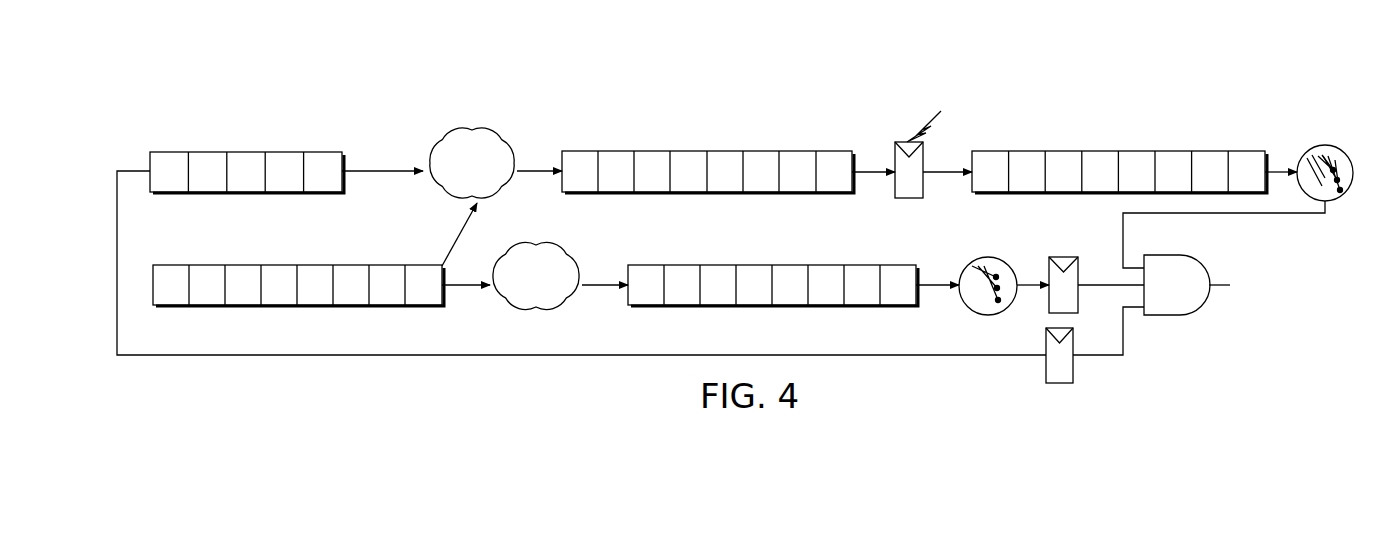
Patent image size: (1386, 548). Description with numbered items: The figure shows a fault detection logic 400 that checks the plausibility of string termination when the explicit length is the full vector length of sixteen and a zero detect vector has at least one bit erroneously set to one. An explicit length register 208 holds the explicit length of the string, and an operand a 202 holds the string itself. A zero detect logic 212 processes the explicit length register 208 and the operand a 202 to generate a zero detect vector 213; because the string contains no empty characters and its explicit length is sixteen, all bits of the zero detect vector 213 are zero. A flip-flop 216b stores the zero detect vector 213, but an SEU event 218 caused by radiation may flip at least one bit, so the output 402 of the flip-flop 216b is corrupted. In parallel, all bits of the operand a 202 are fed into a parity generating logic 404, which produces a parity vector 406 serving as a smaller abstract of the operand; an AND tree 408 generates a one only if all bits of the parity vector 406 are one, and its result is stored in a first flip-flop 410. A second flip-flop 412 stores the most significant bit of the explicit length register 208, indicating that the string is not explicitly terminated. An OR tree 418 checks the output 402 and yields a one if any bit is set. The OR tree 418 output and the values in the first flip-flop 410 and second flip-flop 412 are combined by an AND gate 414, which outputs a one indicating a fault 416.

The fault detection logic 400 is at (1176, 71).
The explicit length register 208 is at (238, 152).
The operand a 202 is at (281, 265).
The zero detect logic 212 is at (458, 128).
The parity generating logic 404 is at (560, 247).
The zero detect vector 213 is at (695, 151).
The flip-flop 216b is at (893, 147).
The SEU event 218 is at (918, 128).
The output of the flip-flop 402 is at (1103, 151).
The OR tree 418 is at (1323, 145).
The parity vector 406 is at (758, 265).
The AND tree 408 is at (983, 257).
The first flip-flop 410 is at (1063, 257).
The second flip-flop 412 is at (1060, 383).
The AND gate 414 is at (1183, 255).
The fault 416 is at (1271, 271).